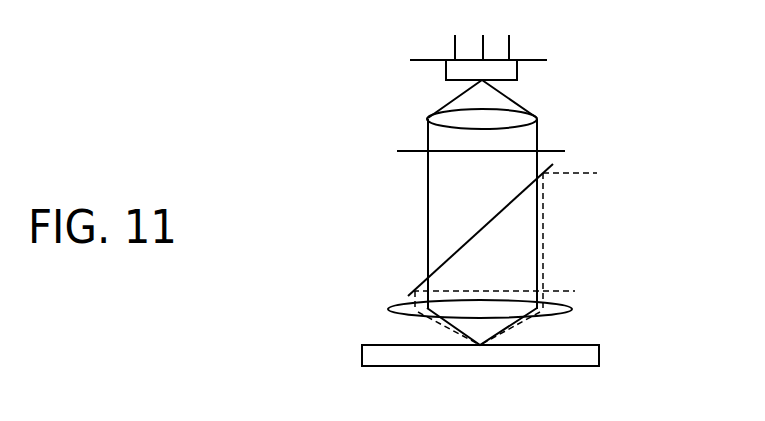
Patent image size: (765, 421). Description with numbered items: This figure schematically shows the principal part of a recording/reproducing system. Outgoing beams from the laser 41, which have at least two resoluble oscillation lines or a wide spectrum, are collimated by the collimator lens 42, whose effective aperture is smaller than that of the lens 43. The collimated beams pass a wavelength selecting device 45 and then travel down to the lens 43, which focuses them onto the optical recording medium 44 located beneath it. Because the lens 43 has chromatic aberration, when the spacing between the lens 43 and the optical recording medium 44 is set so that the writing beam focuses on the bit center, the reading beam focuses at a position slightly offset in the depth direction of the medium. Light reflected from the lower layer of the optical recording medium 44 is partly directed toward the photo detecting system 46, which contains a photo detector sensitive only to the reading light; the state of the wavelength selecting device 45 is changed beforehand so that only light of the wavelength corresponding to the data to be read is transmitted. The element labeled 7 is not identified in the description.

The laser 41 is at (522, 73).
The collimator lens 42 is at (537, 118).
The wavelength selecting device 45 is at (563, 151).
The beam splitter / reflecting mirror 7 is at (427, 288).
The lens 43 is at (572, 308).
The optical recording medium 44 is at (599, 352).
The photo detecting system 46 is at (602, 233).